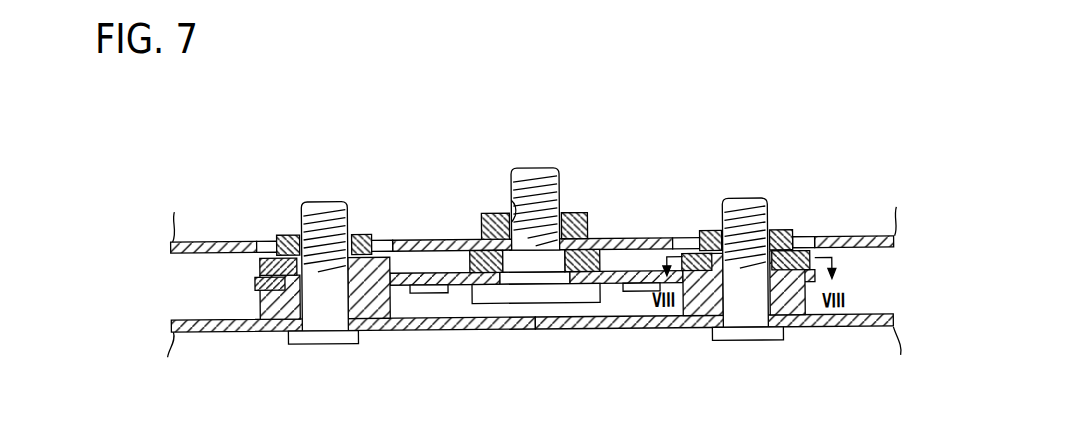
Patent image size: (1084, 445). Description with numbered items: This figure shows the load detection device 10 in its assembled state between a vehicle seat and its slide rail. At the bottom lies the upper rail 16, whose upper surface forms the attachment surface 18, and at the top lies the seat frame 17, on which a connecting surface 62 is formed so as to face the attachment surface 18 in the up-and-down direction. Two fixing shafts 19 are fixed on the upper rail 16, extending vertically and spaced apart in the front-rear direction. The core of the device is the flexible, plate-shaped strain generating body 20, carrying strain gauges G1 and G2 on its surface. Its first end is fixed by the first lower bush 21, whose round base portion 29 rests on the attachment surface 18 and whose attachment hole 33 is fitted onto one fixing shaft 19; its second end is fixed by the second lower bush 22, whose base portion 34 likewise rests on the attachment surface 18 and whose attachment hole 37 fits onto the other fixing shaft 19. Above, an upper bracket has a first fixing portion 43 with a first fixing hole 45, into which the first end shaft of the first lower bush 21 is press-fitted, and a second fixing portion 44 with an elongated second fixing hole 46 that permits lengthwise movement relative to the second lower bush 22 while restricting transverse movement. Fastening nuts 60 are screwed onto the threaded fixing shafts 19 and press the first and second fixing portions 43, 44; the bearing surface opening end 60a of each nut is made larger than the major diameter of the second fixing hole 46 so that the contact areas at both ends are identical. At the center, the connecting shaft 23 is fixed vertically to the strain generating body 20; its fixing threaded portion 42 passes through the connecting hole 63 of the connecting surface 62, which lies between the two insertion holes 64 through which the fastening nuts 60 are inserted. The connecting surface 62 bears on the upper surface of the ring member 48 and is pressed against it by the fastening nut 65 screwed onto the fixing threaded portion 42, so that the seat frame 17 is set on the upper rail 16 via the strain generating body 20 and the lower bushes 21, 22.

The load detection device 10 is at (639, 118).
The upper rail 16 is at (200, 329).
The seat frame 17 is at (862, 239).
The attachment surface 18 is at (873, 317).
The fixing shaft 19 is at (322, 215).
The strain generating body 20 is at (633, 272).
The first lower bush 21 is at (268, 332).
The second lower bush 22 is at (686, 329).
The connecting shaft 23 is at (535, 313).
The base portion 29 is at (375, 305).
The attachment hole 33 is at (313, 300).
The base portion 34 is at (790, 300).
The attachment hole 37 is at (736, 288).
The fixing threaded portion 42 is at (534, 166).
The first fixing portion 43 is at (262, 256).
The second fixing portion 44 is at (803, 252).
The first fixing hole 45 is at (356, 239).
The second fixing hole 46 is at (775, 245).
The ring member 48 is at (470, 238).
The fastening nut 60 is at (285, 233).
The bearing surface opening end 60a is at (790, 253).
The connecting surface 62 is at (198, 251).
The connecting hole 63 is at (510, 202).
The insertion hole 64 is at (393, 239).
The fastening nut 65 is at (572, 213).
The strain gauge G1 is at (431, 292).
The strain gauge G2 is at (643, 292).